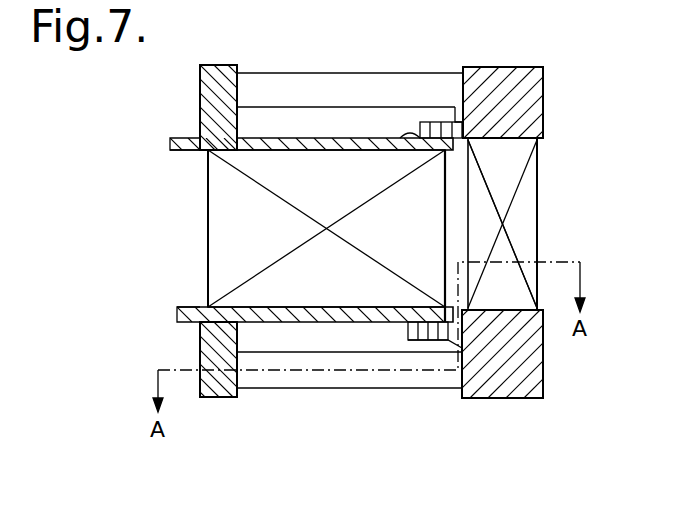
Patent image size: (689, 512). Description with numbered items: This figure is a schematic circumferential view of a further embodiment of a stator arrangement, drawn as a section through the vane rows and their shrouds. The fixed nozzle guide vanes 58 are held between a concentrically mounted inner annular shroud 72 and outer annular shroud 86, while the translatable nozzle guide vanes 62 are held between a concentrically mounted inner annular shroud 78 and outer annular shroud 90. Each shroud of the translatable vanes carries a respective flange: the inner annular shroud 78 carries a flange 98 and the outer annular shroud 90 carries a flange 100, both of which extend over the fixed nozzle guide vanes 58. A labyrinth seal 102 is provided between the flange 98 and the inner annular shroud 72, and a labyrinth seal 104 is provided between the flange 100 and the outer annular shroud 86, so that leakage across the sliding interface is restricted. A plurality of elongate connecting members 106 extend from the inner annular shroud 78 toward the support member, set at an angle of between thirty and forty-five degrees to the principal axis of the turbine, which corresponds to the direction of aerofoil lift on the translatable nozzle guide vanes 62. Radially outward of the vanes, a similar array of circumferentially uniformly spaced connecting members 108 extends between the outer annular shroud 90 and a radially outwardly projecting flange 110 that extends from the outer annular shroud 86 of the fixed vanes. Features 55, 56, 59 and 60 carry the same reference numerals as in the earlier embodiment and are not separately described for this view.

The tube wall 55 is at (208, 182).
The tube wall 56 is at (200, 266).
The fixed nozzle guide vanes 58 is at (232, 215).
The side wall 59 is at (505, 191).
The outer wall 60 is at (550, 224).
The translatable nozzle guide vanes 62 is at (515, 160).
The inner annular shroud 72 is at (190, 318).
The inner annular shroud 78 is at (527, 383).
The outer annular shroud 86 is at (176, 140).
The outer annular shroud 90 is at (527, 98).
The flange 98 is at (435, 347).
The flange 100 is at (441, 118).
The labyrinth seal 102 is at (373, 309).
The labyrinth seal 104 is at (393, 150).
The elongate connecting members 106 is at (287, 377).
The connecting members 108 is at (268, 80).
The radially outwardly projecting flange 110 is at (210, 78).